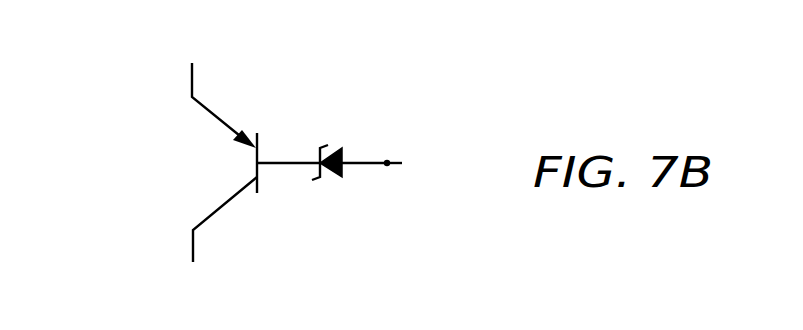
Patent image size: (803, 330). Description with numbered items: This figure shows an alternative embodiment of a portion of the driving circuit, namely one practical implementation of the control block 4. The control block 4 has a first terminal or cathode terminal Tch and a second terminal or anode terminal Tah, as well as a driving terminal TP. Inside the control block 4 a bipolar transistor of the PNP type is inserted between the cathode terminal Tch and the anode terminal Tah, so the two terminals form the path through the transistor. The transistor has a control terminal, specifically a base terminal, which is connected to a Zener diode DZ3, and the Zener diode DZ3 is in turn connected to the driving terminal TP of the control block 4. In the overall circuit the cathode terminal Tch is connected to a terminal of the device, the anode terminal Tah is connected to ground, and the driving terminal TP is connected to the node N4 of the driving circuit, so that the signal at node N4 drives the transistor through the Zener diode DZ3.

The control block 4 is at (147, 133).
The cathode terminal Tch is at (216, 90).
The anode terminal Tah is at (217, 235).
The Zener diode DZ3 is at (349, 145).
The node N4 is at (413, 174).
The driving terminal TP is at (390, 163).